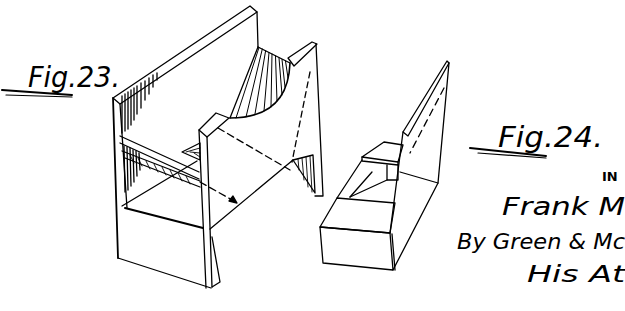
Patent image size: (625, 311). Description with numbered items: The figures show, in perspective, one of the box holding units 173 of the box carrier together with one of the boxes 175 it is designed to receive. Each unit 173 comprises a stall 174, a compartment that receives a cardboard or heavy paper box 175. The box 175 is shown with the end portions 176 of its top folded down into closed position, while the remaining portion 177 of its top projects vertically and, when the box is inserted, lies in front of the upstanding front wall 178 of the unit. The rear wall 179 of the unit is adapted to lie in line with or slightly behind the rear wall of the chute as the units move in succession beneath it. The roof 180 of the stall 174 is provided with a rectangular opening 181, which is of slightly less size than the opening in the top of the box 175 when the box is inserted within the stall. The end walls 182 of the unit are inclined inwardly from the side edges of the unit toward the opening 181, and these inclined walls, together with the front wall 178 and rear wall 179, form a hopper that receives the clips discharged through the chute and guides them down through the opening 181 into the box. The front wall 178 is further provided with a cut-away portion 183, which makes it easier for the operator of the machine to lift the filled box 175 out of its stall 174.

In FIG. 23, the box holding unit 173 is at (113, 128).
In FIG. 23, the stall 174 is at (272, 199).
In FIG. 24, the box 175 is at (452, 238).
In FIG. 24, the end portions of box top 176 is at (388, 146).
In FIG. 24, the remaining portion of box top 177 is at (426, 172).
In FIG. 23, the front wall 178 is at (322, 112).
In FIG. 23, the rear wall 179 is at (205, 93).
In FIG. 23, the roof 180 is at (187, 209).
In FIG. 23, the rectangular opening 181 is at (244, 185).
In FIG. 23, the end walls 182 is at (262, 52).
In FIG. 23, the cut-away portion 183 is at (300, 68).